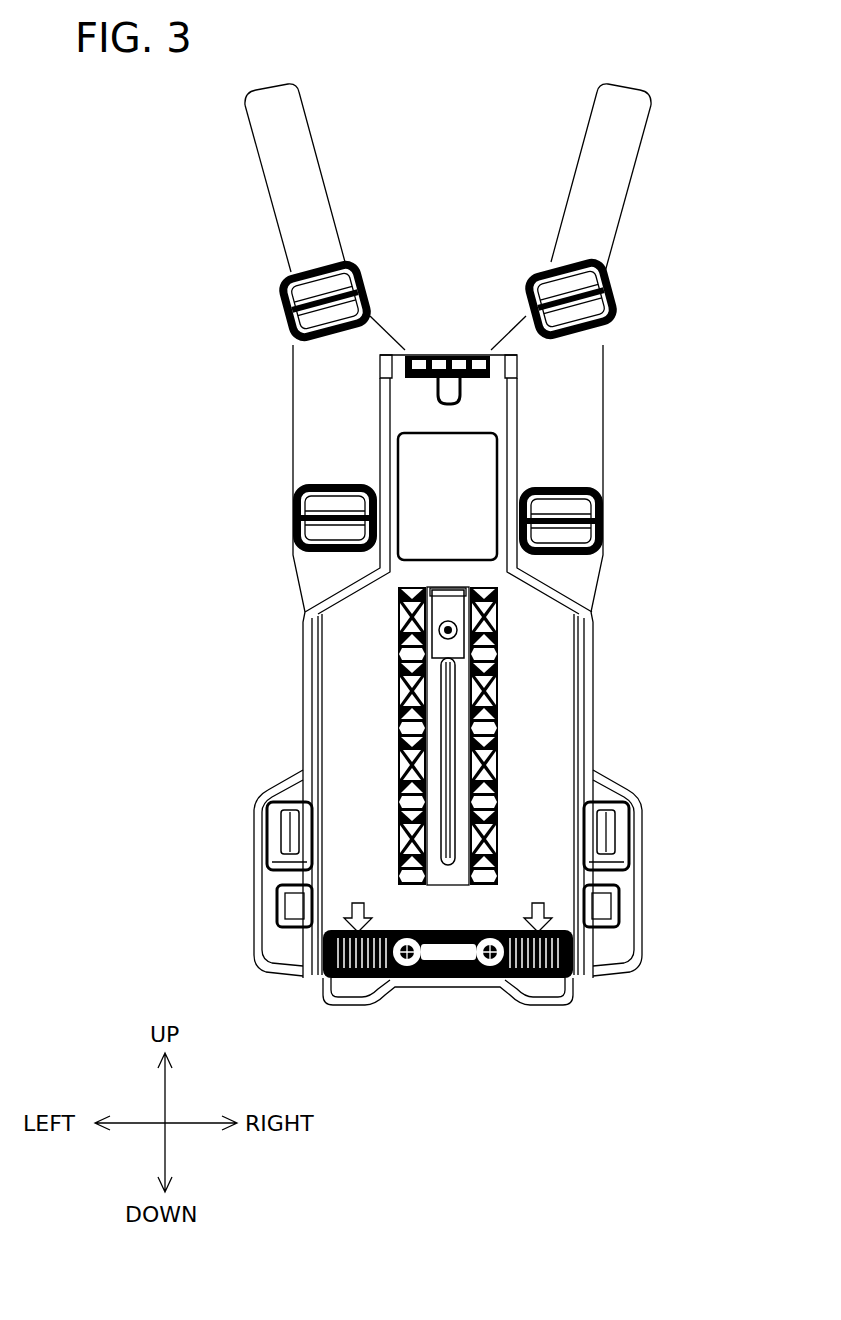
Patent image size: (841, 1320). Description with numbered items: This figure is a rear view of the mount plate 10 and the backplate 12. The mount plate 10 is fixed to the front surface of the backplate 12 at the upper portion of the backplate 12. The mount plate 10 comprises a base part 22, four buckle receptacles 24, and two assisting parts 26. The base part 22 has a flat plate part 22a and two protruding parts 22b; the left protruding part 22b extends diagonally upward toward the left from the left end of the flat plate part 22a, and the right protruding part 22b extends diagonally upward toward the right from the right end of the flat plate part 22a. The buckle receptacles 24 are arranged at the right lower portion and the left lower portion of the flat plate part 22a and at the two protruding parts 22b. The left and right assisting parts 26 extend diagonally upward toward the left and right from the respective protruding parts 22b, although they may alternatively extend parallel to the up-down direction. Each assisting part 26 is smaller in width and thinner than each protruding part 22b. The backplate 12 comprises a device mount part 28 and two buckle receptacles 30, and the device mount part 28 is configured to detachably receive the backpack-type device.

The mount plate 10 is at (320, 391).
The backplate 12 is at (540, 675).
The base part 22 is at (320, 435).
The flat plate part 22a is at (565, 446).
The protruding part 22b is at (300, 320).
The buckle receptacle 24 is at (312, 291).
The assisting part 26 is at (290, 200).
The device mount part 28 is at (350, 657).
The buckle receptacle 30 is at (275, 825).